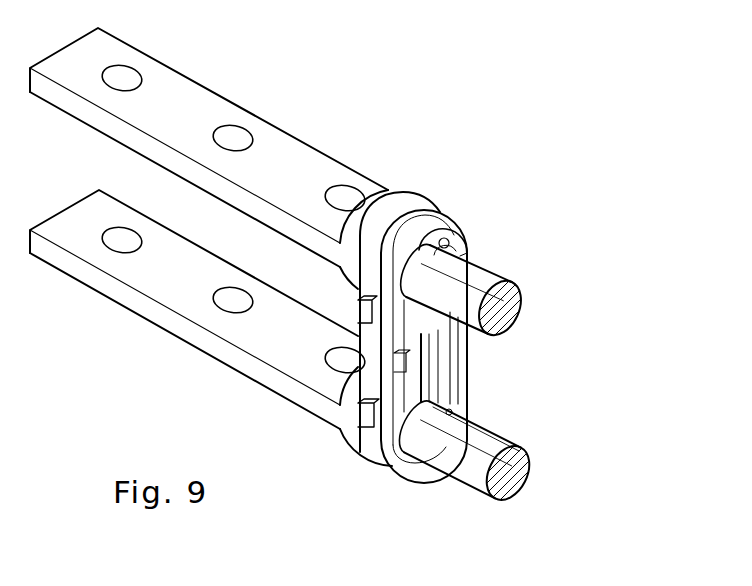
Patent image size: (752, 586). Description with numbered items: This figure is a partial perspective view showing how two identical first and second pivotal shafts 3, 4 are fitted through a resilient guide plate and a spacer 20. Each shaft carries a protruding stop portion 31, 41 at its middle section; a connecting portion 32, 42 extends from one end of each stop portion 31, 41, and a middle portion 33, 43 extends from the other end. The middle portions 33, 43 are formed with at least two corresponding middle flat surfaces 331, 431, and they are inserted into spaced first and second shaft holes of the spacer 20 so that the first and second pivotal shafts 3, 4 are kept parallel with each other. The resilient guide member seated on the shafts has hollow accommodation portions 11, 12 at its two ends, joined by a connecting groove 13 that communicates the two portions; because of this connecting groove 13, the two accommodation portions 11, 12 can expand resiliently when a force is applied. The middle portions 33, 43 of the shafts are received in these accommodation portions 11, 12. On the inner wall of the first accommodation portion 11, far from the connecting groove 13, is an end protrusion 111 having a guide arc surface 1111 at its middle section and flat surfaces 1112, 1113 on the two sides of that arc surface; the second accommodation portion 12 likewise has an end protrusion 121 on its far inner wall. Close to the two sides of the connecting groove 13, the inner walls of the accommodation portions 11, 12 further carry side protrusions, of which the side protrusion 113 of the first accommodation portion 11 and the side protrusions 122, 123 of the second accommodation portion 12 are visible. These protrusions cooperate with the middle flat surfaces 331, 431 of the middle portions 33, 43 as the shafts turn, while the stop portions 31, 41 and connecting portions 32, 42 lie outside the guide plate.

The first pivotal shaft 3 is at (553, 252).
The second pivotal shaft 4 is at (532, 451).
The accommodation portion 11 is at (422, 252).
The end protrusion 111 is at (432, 240).
The guide arc surface 1111 is at (470, 243).
The flat surface 1112 is at (448, 240).
The flat surface 1113 is at (467, 253).
The side protrusion 113 is at (432, 250).
The accommodation portion 12 is at (410, 468).
The end protrusion 121 is at (425, 470).
The side protrusion 122 is at (450, 410).
The side protrusion 123 is at (393, 447).
The connecting groove 13 is at (430, 358).
The spacer 20 is at (417, 208).
The stop portion 31 is at (388, 198).
The connecting portion 32 is at (173, 88).
The middle portion 33 is at (478, 308).
The middle flat surface 331 is at (497, 282).
The stop portion 41 is at (350, 442).
The connecting portion 42 is at (172, 297).
The middle portion 43 is at (478, 483).
The middle flat surface 431 is at (502, 448).